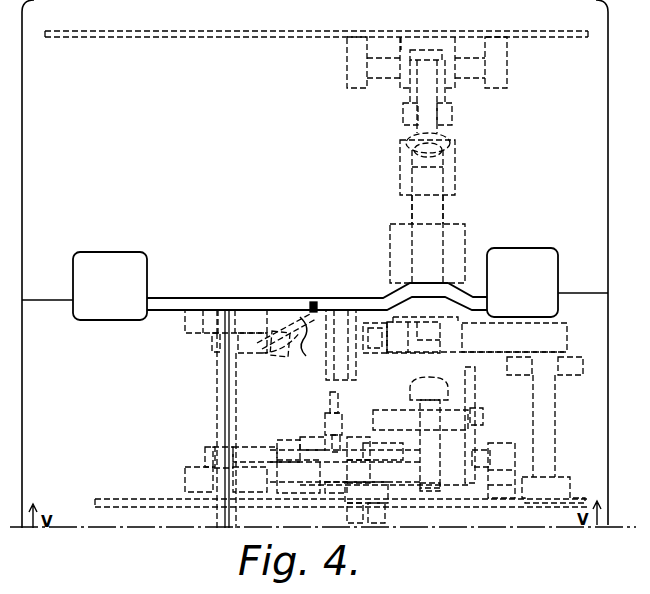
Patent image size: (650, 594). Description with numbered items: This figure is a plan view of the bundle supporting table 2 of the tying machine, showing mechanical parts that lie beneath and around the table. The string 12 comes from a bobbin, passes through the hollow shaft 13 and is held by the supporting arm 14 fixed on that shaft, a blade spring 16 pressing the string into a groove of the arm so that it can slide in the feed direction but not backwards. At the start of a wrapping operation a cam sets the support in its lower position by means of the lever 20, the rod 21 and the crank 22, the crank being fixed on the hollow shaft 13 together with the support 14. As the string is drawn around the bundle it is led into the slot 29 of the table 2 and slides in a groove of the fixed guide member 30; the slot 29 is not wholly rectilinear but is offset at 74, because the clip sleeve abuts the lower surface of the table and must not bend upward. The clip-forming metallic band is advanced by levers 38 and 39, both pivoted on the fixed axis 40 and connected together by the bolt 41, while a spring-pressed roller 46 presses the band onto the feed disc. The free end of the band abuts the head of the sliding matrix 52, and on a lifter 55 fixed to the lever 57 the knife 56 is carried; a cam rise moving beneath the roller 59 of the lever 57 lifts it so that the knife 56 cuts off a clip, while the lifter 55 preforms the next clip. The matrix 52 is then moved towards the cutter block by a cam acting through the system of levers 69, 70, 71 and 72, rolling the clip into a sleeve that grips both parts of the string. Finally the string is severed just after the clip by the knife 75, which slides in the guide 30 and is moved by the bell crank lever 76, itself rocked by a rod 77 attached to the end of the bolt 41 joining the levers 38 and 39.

The horizontal table 2 is at (522, 518).
The string 12 is at (263, 307).
The hollow shaft 13 is at (217, 387).
The supporting arm 14 is at (256, 352).
The blade spring 16 is at (307, 347).
The lever 20 is at (385, 500).
The rod 21 is at (302, 442).
The crank 22 is at (215, 458).
The slot 29 is at (180, 302).
The fixed guide member 30 is at (352, 380).
The lever 38 is at (437, 485).
The lever 39 is at (473, 438).
The fixed axis 40 is at (458, 500).
The bolt 41 is at (397, 417).
The roller 46 is at (485, 403).
The sliding matrix 52 is at (440, 208).
The lifter 55 is at (424, 346).
The knife 56 is at (415, 313).
The lever 57 is at (562, 333).
The roller 59 is at (368, 355).
The lever 69 is at (430, 96).
The lever 70 is at (445, 118).
The lever 71 is at (452, 132).
The lever 72 is at (455, 182).
The offset 74 is at (422, 290).
The knife 75 is at (330, 398).
The bell crank lever 76 is at (327, 412).
The rod 77 is at (330, 430).